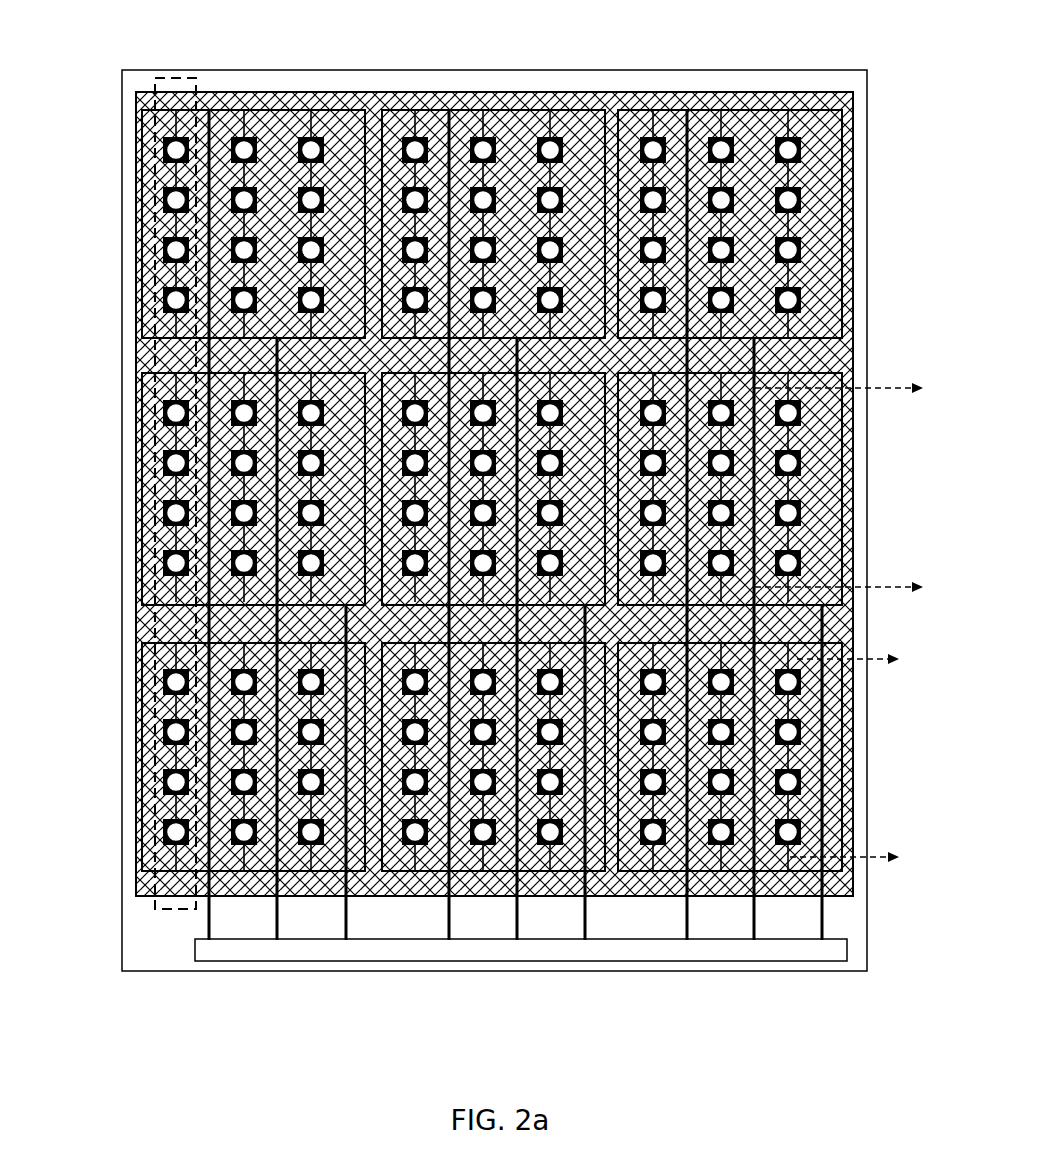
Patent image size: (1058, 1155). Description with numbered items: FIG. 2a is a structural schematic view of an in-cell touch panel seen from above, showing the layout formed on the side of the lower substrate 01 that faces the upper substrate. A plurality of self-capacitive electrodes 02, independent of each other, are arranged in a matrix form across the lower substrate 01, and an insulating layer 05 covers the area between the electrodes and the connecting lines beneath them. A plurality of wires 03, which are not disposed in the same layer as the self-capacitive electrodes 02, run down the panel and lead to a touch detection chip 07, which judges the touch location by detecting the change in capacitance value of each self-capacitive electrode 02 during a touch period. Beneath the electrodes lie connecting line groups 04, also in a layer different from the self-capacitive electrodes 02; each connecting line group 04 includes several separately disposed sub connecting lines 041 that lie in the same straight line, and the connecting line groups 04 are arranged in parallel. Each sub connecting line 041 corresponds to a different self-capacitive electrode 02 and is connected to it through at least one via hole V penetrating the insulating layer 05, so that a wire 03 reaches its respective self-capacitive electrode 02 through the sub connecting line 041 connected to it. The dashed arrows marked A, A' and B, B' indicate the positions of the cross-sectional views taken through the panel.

The lower substrate 01 is at (540, 70).
The self-capacitive electrode 02 is at (257, 110).
The wire 03 is at (347, 912).
The connecting line group 04 is at (176, 78).
The sub connecting line 041 is at (163, 222).
The insulating layer 05 is at (765, 92).
The touch detection chip 07 is at (442, 947).
The via hole V is at (163, 298).
The section line A is at (850, 388).
The section line A' is at (853, 587).
The section line B is at (857, 660).
The section line B' is at (858, 858).